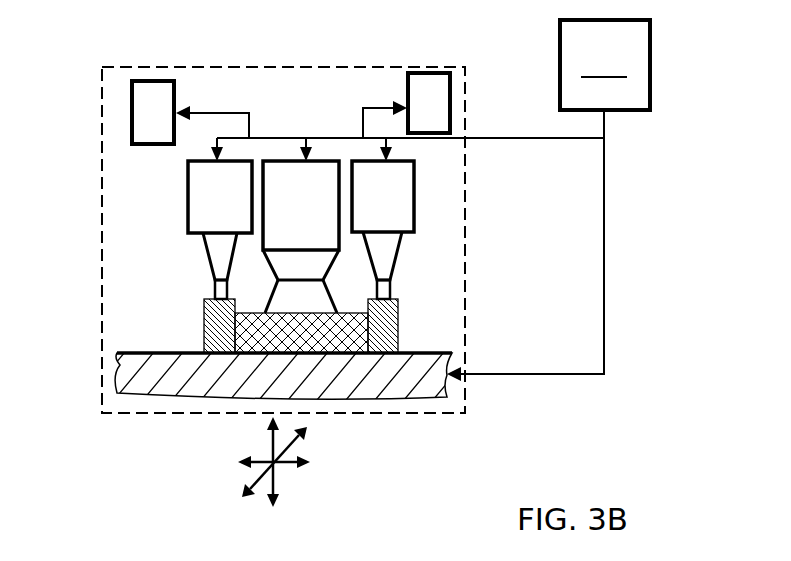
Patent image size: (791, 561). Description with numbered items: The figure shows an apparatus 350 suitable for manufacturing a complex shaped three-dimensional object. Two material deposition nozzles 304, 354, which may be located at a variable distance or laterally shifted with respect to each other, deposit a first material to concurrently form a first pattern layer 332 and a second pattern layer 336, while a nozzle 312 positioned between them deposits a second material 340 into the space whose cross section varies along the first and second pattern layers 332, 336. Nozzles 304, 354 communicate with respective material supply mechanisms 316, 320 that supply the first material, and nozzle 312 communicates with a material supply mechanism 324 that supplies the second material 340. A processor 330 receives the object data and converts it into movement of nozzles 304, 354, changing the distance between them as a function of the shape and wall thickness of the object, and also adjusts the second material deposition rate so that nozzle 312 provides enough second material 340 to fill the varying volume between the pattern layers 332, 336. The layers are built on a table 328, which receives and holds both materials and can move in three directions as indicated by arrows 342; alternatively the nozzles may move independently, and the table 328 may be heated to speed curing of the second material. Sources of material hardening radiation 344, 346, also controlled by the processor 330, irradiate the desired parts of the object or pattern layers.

The apparatus 350 is at (273, 56).
The processor 330 is at (413, 200).
The source of material hardening radiation 344 is at (150, 118).
The source of material hardening radiation 346 is at (437, 100).
The material supply mechanism 316 is at (210, 182).
The material supply mechanism 324 is at (308, 182).
The material supply mechanism 320 is at (397, 192).
The material deposition nozzle 304 is at (221, 266).
The nozzle 312 is at (288, 277).
The material deposition nozzle 354 is at (383, 269).
The first pattern layer 332 is at (220, 332).
The second pattern layer 336 is at (398, 316).
The second material 340 is at (303, 343).
The table 328 is at (138, 372).
The arrows 342 is at (253, 443).